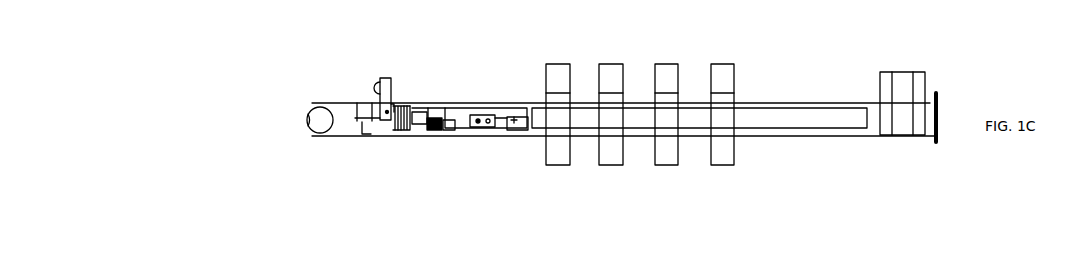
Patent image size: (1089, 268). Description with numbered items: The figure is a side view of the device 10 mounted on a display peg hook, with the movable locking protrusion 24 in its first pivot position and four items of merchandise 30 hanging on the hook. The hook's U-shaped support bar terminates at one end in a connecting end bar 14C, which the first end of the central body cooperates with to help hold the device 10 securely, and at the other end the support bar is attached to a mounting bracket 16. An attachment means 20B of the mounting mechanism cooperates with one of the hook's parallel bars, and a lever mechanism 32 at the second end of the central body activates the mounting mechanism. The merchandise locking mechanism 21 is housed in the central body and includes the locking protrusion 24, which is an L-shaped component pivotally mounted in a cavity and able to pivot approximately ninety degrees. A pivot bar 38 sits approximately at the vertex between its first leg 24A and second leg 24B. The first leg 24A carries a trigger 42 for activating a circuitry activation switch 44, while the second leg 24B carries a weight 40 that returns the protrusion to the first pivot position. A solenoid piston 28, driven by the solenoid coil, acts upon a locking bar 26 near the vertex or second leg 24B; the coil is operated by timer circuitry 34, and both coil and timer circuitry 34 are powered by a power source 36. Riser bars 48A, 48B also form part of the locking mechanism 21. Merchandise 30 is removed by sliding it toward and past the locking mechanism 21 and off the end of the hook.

The device 10 is at (300, 92).
The connecting end bar 14C is at (305, 126).
The mounting bracket 16 is at (940, 118).
The attachment means 20B is at (815, 138).
The merchandise locking mechanism 21 is at (383, 134).
The movable locking protrusion 24 is at (385, 78).
The first leg 24A is at (393, 108).
The second leg 24B is at (430, 108).
The locking bar 26 is at (414, 135).
The solenoid piston 28 is at (436, 132).
The merchandise 30 is at (560, 167).
The lever mechanism 32 is at (905, 72).
The timer circuitry 34 is at (487, 117).
The power source 36 is at (517, 132).
The pivot bar 38 is at (390, 110).
The weight 40 is at (415, 120).
The trigger 42 is at (376, 84).
The circuitry activation switch 44 is at (362, 137).
The riser bar 48A is at (396, 137).
The riser bar 48B is at (405, 137).